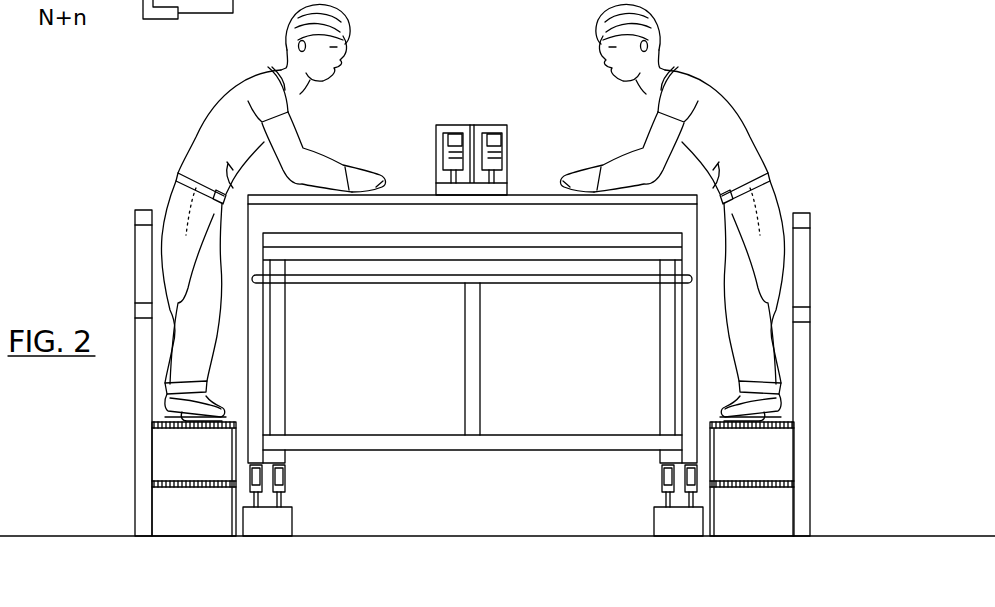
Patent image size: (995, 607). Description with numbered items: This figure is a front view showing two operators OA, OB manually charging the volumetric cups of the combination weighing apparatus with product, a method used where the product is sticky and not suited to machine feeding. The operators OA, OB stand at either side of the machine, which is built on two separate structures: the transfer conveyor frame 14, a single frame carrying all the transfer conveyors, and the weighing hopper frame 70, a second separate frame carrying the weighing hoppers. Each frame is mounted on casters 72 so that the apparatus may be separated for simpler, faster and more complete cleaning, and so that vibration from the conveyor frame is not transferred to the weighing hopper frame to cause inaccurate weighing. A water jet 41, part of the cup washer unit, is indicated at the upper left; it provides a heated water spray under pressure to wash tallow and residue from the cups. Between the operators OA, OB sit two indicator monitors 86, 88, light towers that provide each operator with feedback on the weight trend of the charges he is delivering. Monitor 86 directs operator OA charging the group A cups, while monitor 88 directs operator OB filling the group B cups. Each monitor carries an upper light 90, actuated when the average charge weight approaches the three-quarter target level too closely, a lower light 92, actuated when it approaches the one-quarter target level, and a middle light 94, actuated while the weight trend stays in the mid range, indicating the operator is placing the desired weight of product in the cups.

The transfer conveyor frame 14 is at (472, 365).
The water jet 41 is at (155, 12).
The weighing hopper frame 70 is at (278, 341).
The casters 72 is at (281, 480).
The indicator monitor 86 is at (451, 101).
The indicator monitor 88 is at (496, 103).
The upper light 90 is at (492, 136).
The lower light 92 is at (493, 163).
The middle light 94 is at (493, 152).
The operator OA is at (217, 110).
The operator OB is at (713, 127).